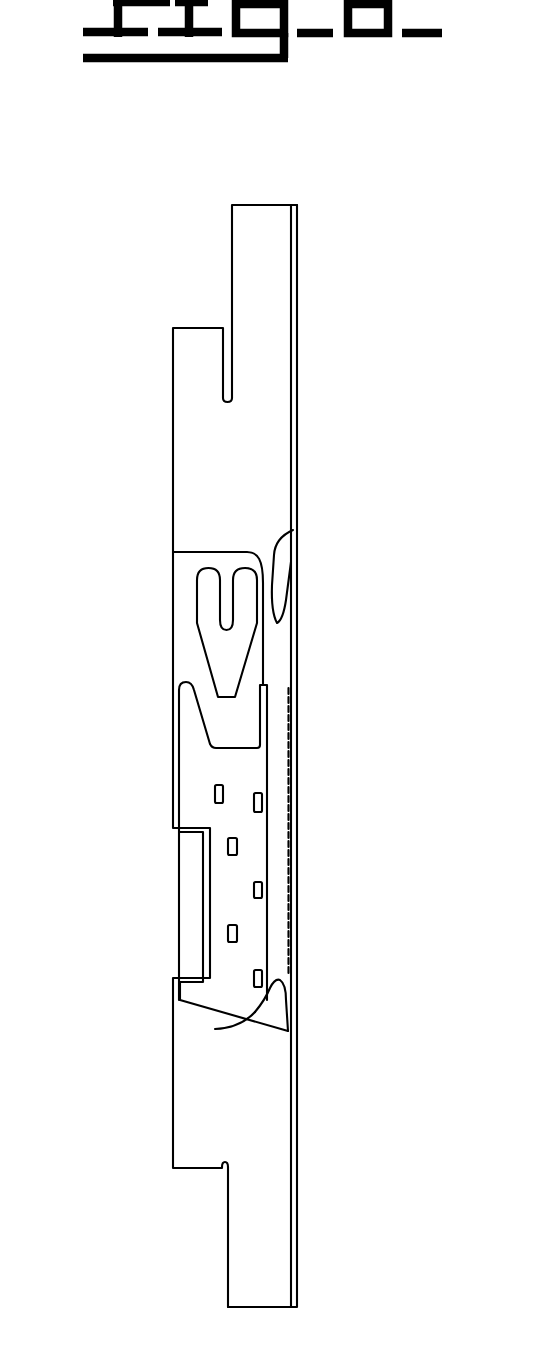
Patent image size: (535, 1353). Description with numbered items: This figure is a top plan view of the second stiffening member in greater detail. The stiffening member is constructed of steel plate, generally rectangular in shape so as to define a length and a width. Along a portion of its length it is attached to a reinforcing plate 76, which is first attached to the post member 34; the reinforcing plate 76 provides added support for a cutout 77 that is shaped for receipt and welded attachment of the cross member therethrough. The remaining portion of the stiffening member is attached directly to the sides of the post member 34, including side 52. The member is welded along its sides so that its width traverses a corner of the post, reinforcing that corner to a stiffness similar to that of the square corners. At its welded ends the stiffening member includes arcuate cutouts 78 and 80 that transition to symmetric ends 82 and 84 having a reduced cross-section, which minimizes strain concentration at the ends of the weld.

The post member 34 is at (185, 1168).
The side of post member 52 is at (297, 1133).
The reinforcing plate 76 is at (205, 948).
The cutout 77 is at (205, 883).
The arcuate cutout 78 is at (291, 536).
The arcuate cutout 80 is at (291, 1040).
The symmetric end 82 is at (173, 552).
The symmetric end 84 is at (215, 1029).